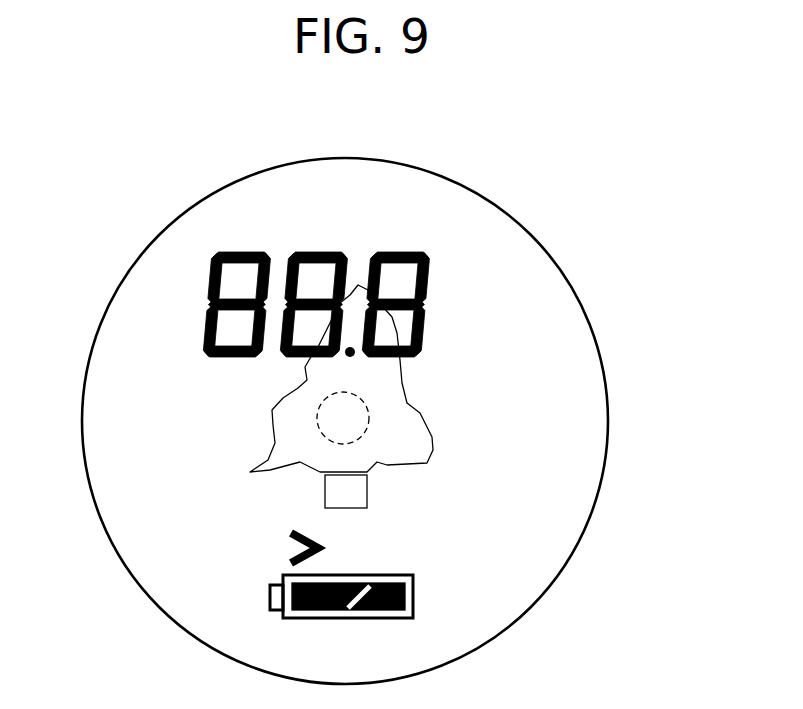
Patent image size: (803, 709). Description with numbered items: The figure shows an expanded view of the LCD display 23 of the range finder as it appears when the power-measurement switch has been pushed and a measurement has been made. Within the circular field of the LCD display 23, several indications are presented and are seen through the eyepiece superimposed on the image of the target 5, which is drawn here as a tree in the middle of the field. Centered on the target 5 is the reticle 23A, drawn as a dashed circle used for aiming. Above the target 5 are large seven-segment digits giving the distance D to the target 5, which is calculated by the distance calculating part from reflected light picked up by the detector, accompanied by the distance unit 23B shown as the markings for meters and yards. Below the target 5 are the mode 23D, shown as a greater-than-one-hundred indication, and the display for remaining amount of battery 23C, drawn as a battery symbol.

The LCD display 23 is at (175, 220).
The distance D is at (317, 253).
The distance unit 23B is at (487, 307).
The target 5 is at (273, 411).
The reticle 23A is at (355, 415).
The mode 23D is at (420, 543).
The display for remaining amount of battery 23C is at (413, 593).